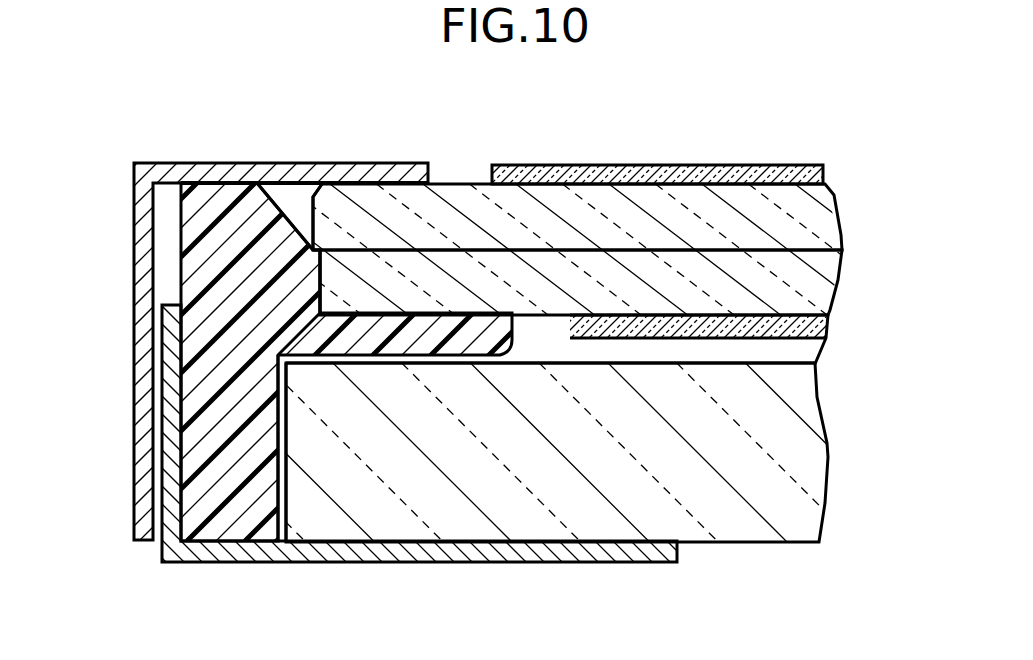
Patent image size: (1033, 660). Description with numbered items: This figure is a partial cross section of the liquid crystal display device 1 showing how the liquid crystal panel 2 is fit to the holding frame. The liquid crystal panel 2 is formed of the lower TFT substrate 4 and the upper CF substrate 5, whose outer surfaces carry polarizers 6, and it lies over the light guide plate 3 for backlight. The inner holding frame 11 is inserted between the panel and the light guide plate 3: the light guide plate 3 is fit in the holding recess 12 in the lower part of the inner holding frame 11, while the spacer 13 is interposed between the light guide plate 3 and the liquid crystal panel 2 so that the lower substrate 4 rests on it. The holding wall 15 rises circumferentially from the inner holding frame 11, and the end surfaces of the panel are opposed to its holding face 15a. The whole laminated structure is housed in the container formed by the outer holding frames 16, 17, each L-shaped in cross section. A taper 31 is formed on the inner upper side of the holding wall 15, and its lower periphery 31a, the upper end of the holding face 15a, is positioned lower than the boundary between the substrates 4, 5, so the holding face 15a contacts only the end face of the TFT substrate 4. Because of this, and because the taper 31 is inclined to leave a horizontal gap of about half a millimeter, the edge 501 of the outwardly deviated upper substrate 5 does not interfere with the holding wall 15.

The liquid crystal display device 1 is at (772, 150).
The liquid crystal panel 2 is at (578, 229).
The light guide plate 3 is at (830, 410).
The TFT substrate 4 is at (826, 278).
The CF substrate 5 is at (822, 207).
The polarizer 6 is at (683, 176).
The inner holding frame 11 is at (176, 247).
The holding recess 12 is at (283, 495).
The spacer 13 is at (423, 347).
The holding wall 15 is at (220, 200).
The holding face 15a is at (326, 285).
The outer holding frame 16 is at (203, 555).
The outer holding frame 17 is at (258, 195).
The taper 31 is at (306, 222).
The lower periphery of taper 31a is at (322, 283).
The edge 501 is at (332, 262).